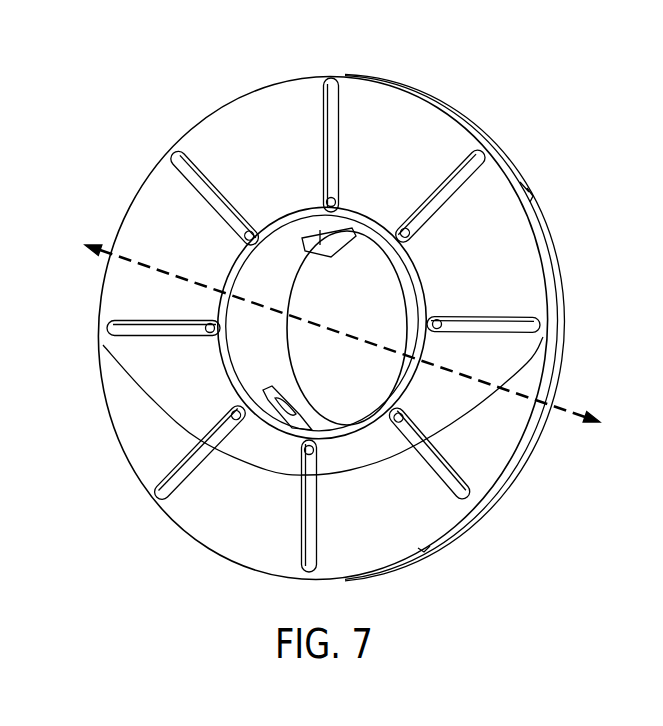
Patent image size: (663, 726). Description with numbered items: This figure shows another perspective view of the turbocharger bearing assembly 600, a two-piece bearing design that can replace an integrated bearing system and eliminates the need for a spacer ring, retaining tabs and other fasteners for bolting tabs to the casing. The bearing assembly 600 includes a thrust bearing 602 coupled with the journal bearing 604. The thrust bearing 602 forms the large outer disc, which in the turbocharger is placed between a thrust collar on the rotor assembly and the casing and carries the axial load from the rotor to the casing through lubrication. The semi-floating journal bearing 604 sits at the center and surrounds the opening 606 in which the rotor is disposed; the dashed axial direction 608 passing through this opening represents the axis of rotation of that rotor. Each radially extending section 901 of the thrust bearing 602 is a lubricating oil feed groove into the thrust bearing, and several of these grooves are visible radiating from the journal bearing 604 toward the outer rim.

The turbocharger bearing assembly 600 is at (102, 88).
The thrust bearing 602 is at (142, 443).
The journal bearing 604 is at (288, 275).
The opening 606 is at (362, 387).
The axial direction 608 is at (147, 268).
The section of the thrust bearing 901 is at (341, 125).